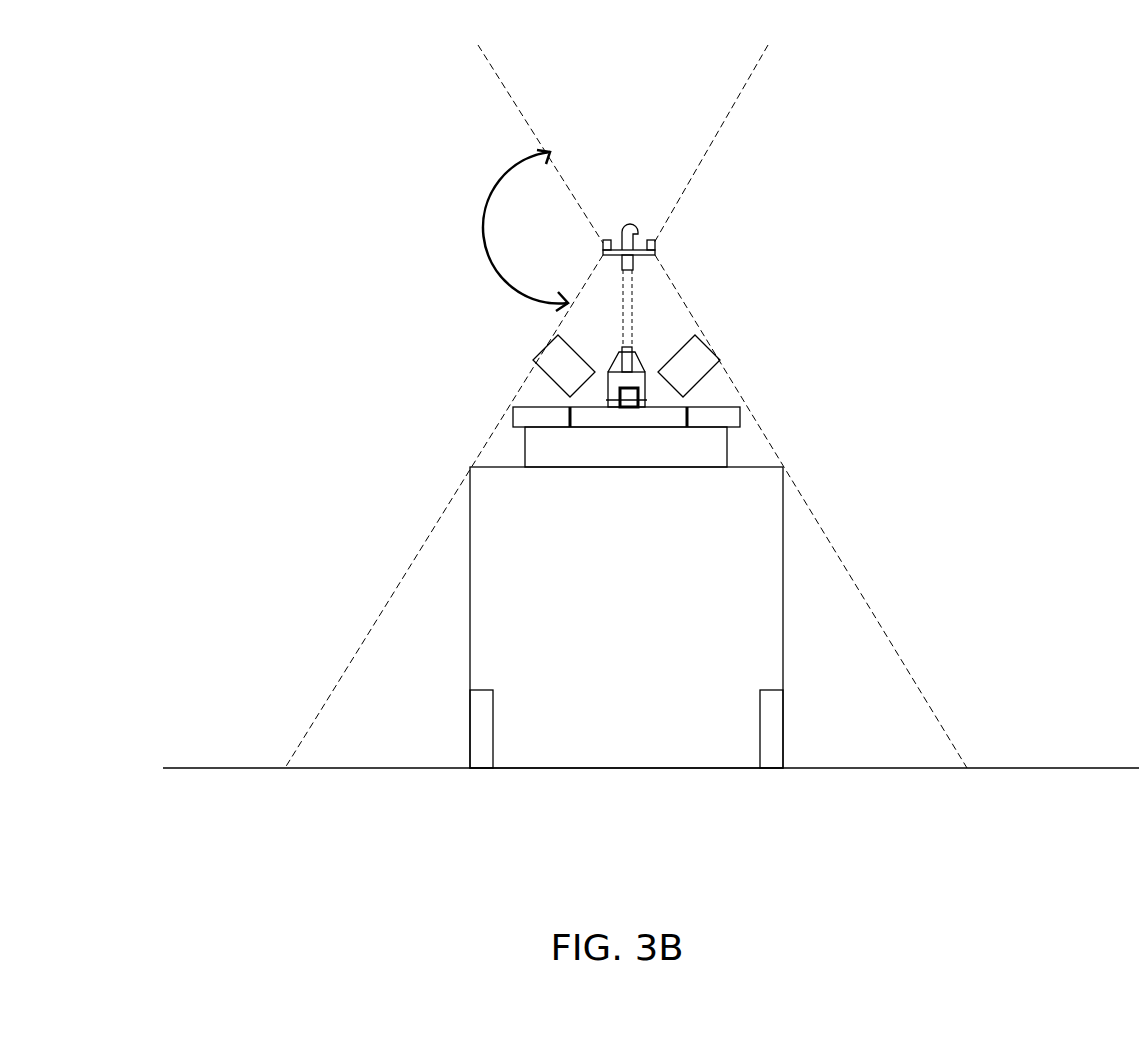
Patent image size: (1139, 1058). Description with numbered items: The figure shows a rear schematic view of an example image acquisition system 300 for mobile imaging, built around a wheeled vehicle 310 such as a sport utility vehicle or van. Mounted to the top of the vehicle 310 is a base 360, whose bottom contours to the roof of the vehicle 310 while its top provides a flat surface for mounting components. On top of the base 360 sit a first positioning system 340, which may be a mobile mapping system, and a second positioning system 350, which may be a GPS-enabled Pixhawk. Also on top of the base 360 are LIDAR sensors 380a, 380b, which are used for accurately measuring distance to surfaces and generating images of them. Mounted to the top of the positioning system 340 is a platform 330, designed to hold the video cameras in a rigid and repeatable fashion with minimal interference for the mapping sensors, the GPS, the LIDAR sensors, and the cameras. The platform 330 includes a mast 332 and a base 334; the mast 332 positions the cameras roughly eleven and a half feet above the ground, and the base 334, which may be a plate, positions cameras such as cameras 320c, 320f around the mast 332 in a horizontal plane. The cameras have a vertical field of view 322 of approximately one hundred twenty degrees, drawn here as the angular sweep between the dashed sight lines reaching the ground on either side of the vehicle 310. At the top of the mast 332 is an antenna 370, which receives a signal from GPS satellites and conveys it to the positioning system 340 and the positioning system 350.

The image acquisition system 300 is at (1003, 124).
The vehicle 310 is at (470, 642).
The video camera 320c is at (655, 244).
The video camera 320f is at (603, 245).
The vertical field of view 322 is at (483, 222).
The platform 330 is at (633, 352).
The mast 332 is at (621, 305).
The base 334 is at (638, 256).
The first positioning system 340 is at (606, 400).
The second positioning system 350 is at (629, 401).
The base 360 is at (740, 417).
The antenna 370 is at (627, 224).
The LIDAR sensor 380a is at (706, 343).
The LIDAR sensor 380b is at (548, 342).